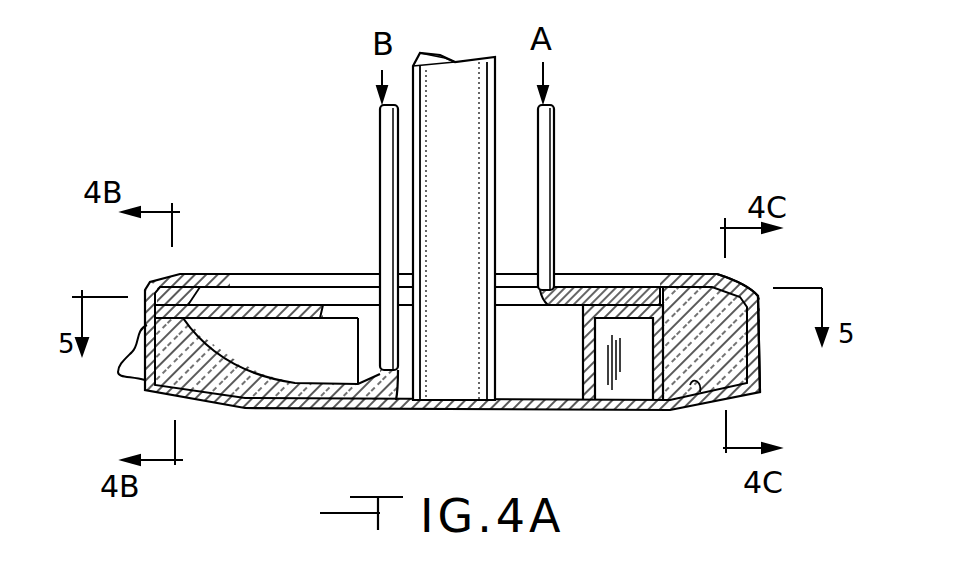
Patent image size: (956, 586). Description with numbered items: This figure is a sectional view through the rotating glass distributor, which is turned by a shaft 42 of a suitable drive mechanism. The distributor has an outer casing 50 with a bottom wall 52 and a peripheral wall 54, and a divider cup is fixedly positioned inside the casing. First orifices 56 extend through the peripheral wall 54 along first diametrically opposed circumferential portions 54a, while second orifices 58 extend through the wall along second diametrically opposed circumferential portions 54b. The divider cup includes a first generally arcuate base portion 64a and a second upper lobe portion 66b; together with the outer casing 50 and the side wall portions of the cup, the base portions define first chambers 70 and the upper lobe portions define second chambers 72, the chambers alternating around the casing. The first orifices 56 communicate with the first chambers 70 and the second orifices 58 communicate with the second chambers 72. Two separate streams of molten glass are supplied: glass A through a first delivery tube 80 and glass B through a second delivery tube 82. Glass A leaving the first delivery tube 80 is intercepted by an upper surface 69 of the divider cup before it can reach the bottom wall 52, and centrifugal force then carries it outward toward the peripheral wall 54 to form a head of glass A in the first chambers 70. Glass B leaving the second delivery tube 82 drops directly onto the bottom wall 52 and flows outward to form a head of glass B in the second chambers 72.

The shaft 42 is at (466, 74).
The outer casing 50 is at (693, 398).
The bottom wall 52 is at (628, 408).
The peripheral wall 54 is at (764, 390).
The first diametrically opposed circumferential portions 54a is at (762, 362).
The second diametrically opposed circumferential portions 54b is at (148, 305).
The first orifices 56 is at (762, 348).
The second orifices 58 is at (145, 378).
The first generally arcuate base portion 64a is at (650, 347).
The second upper lobe portion 66b is at (237, 317).
The upper surface 69 is at (588, 305).
The first chambers 70 is at (700, 392).
The second chambers 72 is at (244, 398).
The first delivery tube 80 is at (550, 168).
The second delivery tube 82 is at (380, 168).